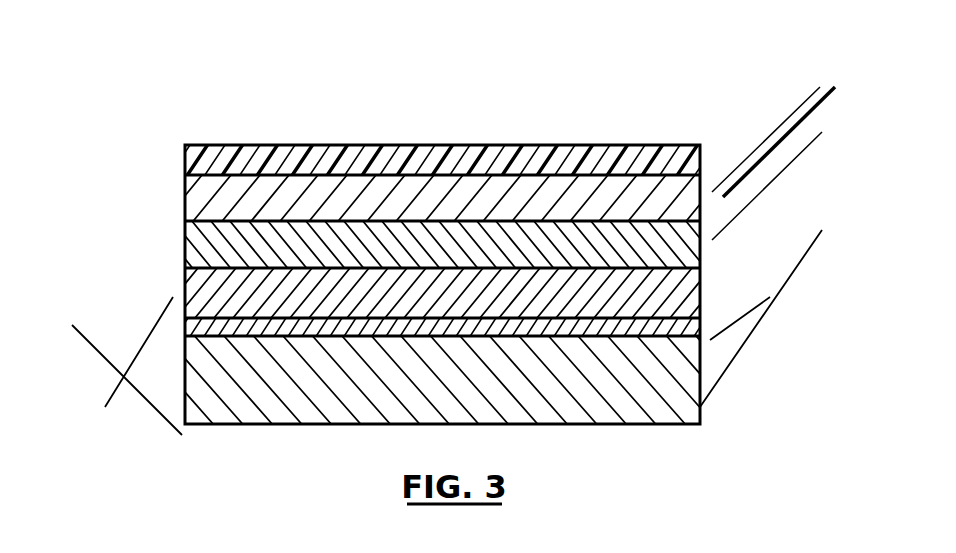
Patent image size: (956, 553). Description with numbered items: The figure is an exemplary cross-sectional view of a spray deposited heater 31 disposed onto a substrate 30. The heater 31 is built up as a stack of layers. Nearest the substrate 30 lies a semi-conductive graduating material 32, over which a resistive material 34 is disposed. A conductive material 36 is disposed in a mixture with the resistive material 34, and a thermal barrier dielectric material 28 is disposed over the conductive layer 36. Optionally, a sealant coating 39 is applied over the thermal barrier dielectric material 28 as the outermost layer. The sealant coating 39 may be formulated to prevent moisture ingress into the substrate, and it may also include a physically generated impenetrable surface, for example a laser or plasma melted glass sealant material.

The heater 31 is at (392, 90).
The sealant coating 39 is at (183, 160).
The thermal barrier dielectric material 28 is at (700, 202).
The conductive material 36 is at (183, 247).
The resistive material 34 is at (700, 290).
The semi-conductive graduating material 32 is at (185, 328).
The substrate 30 is at (700, 373).